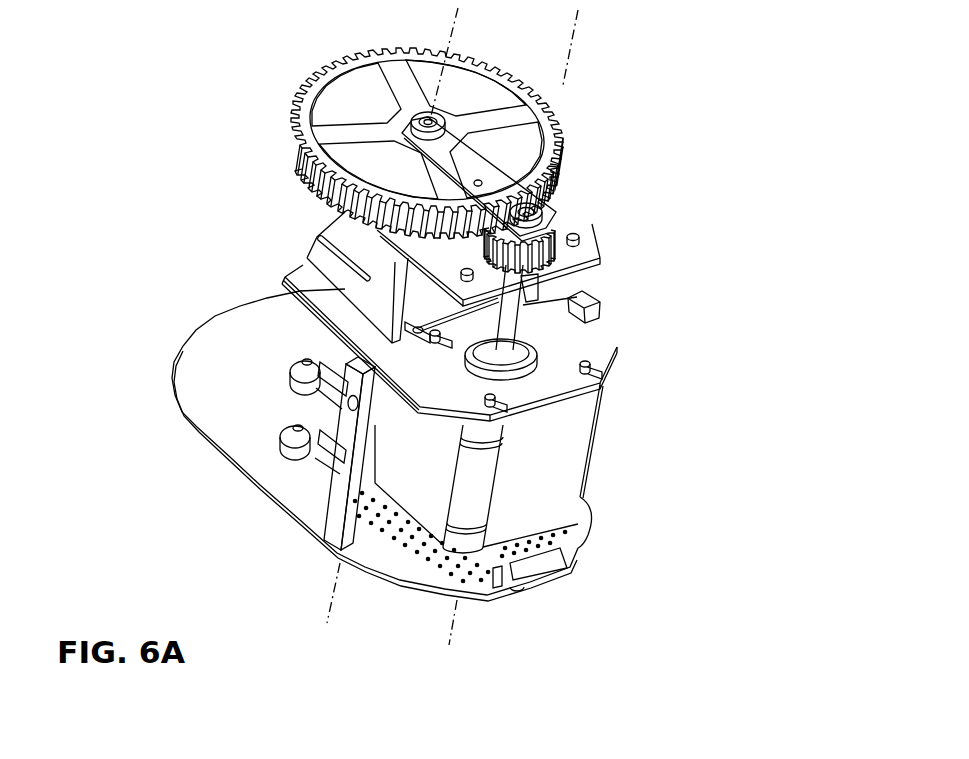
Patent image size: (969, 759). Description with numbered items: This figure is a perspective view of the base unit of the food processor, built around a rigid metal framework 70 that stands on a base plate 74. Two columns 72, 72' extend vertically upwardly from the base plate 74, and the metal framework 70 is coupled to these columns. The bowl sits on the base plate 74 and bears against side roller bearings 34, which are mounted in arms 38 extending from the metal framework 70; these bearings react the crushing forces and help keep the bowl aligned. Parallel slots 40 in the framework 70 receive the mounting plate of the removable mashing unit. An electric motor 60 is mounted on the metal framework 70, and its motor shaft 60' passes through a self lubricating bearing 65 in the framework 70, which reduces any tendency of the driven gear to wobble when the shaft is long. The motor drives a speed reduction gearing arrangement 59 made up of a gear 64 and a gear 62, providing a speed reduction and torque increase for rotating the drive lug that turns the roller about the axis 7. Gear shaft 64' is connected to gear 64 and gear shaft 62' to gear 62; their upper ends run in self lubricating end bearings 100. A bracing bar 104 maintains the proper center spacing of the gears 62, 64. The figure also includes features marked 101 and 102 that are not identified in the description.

The speed reduction gearing arrangement 59 is at (290, 60).
The self lubricating end bearings 100 is at (410, 127).
The bracing bar 104 is at (470, 180).
The parallel slots 40 is at (318, 240).
The metal framework 70 is at (357, 298).
The arms 38 is at (318, 375).
The base plate 74 is at (237, 398).
The side roller bearings 34 is at (293, 380).
The column 72 is at (228, 453).
The axis 7 is at (460, 25).
The gear axis line 101 is at (580, 25).
The gear shaft 62' is at (580, 78).
The gear 62 is at (564, 191).
The gear shaft 64' is at (627, 207).
The gear 64 is at (598, 250).
The column 72' is at (640, 300).
The motor shaft 60' is at (628, 307).
The self lubricating bearing 65 is at (524, 364).
The electric motor 60 is at (548, 469).
The guide bar hole 102 is at (364, 408).